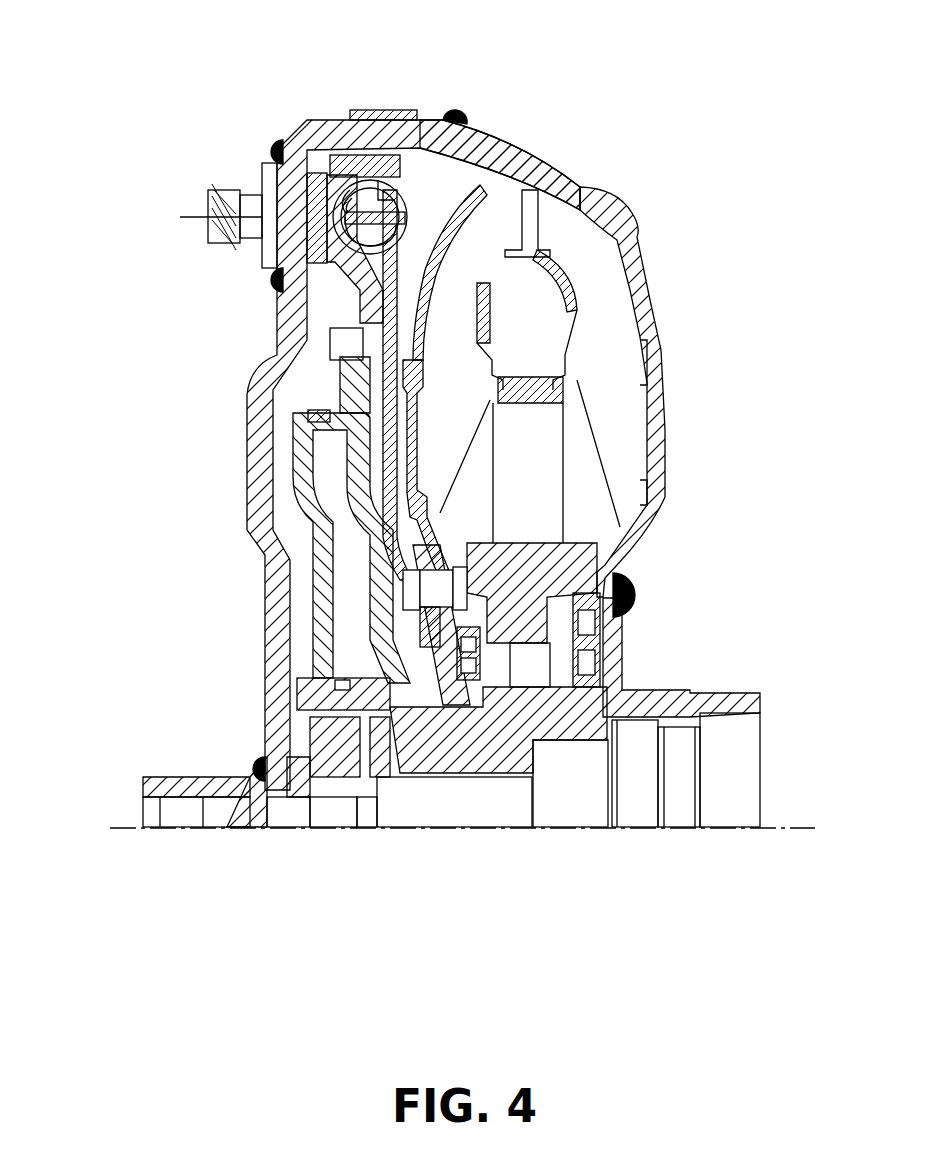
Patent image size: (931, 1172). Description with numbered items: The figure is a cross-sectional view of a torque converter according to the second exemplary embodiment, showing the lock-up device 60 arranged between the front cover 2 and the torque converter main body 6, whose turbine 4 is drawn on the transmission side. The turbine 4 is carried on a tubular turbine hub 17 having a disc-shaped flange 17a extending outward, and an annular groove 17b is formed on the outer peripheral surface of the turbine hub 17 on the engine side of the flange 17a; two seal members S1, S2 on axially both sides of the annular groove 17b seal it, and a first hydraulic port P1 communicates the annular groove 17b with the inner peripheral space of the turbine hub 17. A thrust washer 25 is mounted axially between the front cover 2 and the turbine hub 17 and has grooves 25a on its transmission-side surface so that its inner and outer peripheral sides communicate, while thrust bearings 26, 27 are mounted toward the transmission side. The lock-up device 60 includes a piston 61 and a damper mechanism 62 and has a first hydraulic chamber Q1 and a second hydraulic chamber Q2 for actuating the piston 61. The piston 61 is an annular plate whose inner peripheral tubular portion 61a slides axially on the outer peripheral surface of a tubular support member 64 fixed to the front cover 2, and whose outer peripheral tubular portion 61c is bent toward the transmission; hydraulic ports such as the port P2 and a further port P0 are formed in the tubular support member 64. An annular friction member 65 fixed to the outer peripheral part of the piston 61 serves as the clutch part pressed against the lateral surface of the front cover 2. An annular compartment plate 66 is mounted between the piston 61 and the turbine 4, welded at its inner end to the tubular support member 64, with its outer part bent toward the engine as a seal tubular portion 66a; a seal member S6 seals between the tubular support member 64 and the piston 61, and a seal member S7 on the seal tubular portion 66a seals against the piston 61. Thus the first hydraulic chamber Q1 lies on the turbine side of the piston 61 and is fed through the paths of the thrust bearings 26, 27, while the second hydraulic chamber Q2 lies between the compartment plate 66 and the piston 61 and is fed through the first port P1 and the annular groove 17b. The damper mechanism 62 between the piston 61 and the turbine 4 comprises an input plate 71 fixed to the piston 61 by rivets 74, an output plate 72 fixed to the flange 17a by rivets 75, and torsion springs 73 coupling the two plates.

The front cover 2 is at (250, 410).
The turbine 4 is at (500, 227).
The torque converter main body 6 is at (630, 207).
The turbine hub 17 is at (463, 723).
The flange 17a is at (603, 630).
The annular groove 17b is at (433, 717).
The thrust washer 25 is at (290, 733).
The grooves 25a is at (290, 780).
The thrust bearing 26 is at (500, 723).
The thrust bearing 27 is at (593, 657).
The lock-up device 60 is at (433, 190).
The piston 61 is at (290, 490).
The inner peripheral tubular portion 61a is at (280, 348).
The outer peripheral tubular portion 61c is at (360, 160).
The damper mechanism 62 is at (427, 227).
The tubular support member 64 is at (290, 690).
The friction member 65 is at (300, 177).
The compartment plate 66 is at (617, 527).
The seal tubular portion 66a is at (340, 423).
The input plate 71 is at (337, 260).
The output plate 72 is at (443, 262).
The torsion springs 73 is at (353, 197).
The rivets 74 is at (330, 340).
The rivets 75 is at (403, 575).
The first hydraulic chamber Q1 is at (443, 290).
The second hydraulic chamber Q2 is at (372, 600).
The seal member S1 is at (317, 733).
The seal member S2 is at (403, 733).
The seal member S6 is at (310, 663).
The seal member S7 is at (317, 413).
The passage P0 is at (357, 747).
The first hydraulic port P1 is at (307, 697).
The hydraulic port P2 is at (398, 740).